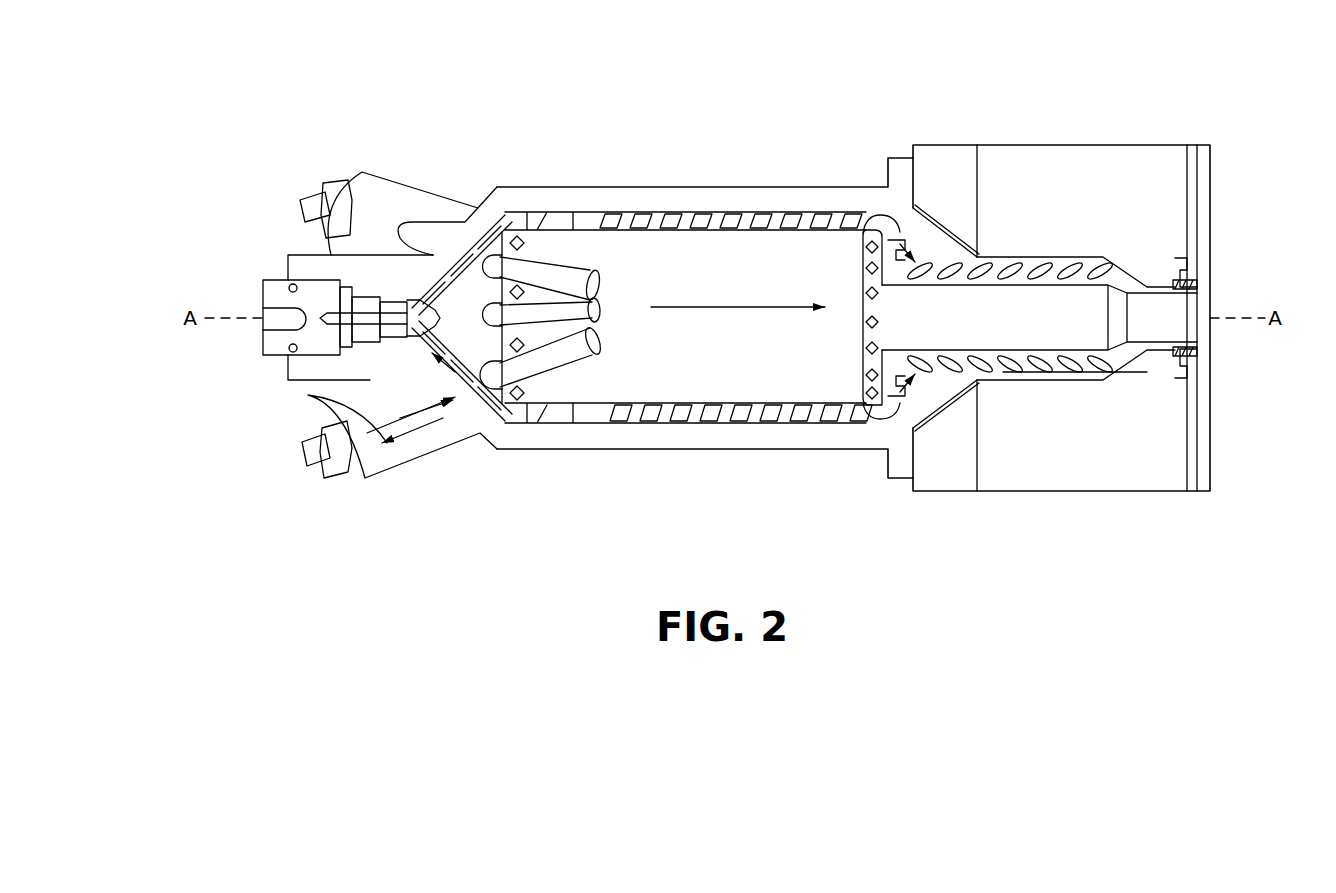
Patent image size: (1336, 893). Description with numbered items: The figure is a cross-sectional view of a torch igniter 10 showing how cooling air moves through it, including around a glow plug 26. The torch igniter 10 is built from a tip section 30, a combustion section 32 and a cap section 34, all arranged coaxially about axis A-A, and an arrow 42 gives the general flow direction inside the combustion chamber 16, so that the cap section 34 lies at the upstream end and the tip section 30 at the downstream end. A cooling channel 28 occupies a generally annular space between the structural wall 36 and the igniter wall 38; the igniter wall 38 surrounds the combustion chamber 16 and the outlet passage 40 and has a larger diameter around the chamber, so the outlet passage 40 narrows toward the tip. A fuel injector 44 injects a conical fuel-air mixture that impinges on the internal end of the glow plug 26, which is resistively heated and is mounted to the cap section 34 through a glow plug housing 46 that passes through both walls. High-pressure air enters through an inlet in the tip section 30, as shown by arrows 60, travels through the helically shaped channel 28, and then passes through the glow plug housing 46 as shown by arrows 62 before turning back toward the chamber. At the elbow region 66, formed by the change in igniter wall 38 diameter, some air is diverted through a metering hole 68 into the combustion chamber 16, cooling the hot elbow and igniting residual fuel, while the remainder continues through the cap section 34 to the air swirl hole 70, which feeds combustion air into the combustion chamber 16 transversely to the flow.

The torch igniter 10 is at (547, 110).
The combustion chamber 16 is at (589, 317).
The glow plug 26 is at (545, 268).
The cooling channel 28 is at (750, 218).
The tip section 30 is at (1018, 228).
The combustion section 32 is at (657, 160).
The cap section 34 is at (378, 263).
The structural wall 36 is at (830, 432).
The igniter wall 38 is at (837, 403).
The outlet passage 40 is at (1039, 317).
The arrow 42 is at (722, 305).
The fuel injector 44 is at (333, 333).
The glow plug housing 46 is at (412, 462).
The arrows 60 is at (690, 430).
The arrows 62 is at (437, 363).
The elbow region 66 is at (905, 178).
The metering hole 68 is at (863, 294).
The air swirl hole 70 is at (488, 413).